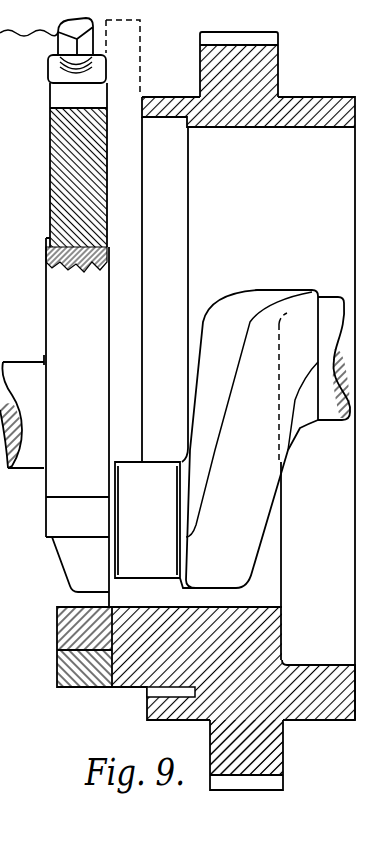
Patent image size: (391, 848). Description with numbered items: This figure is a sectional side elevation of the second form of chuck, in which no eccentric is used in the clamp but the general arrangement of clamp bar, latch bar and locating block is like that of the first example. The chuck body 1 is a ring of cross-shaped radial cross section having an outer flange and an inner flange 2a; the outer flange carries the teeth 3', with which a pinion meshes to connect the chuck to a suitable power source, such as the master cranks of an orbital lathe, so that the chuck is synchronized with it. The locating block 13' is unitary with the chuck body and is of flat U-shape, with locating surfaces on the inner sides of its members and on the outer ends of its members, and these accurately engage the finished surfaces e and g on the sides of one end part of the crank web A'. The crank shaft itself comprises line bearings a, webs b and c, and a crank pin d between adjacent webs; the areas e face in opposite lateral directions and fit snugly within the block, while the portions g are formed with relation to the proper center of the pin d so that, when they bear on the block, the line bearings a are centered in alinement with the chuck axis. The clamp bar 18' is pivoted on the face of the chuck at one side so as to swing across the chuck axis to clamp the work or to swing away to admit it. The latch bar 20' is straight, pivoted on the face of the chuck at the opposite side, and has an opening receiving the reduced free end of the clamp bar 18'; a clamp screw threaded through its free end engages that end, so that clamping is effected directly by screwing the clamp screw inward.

The chuck body 1 is at (306, 667).
The inner flange 2a is at (282, 616).
The teeth 3' is at (264, 408).
The locating block 13' is at (59, 647).
The clamp bar 18' is at (54, 165).
The latch bar 20' is at (57, 50).
The crank web A' is at (59, 259).
The line bearing a is at (15, 380).
The web b is at (95, 378).
The web c is at (255, 498).
The crank pin d is at (151, 478).
The locating area e is at (72, 517).
The locating area g is at (72, 495).